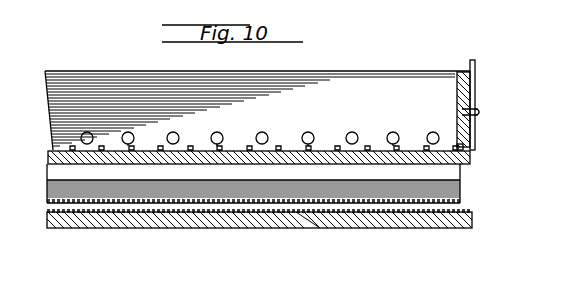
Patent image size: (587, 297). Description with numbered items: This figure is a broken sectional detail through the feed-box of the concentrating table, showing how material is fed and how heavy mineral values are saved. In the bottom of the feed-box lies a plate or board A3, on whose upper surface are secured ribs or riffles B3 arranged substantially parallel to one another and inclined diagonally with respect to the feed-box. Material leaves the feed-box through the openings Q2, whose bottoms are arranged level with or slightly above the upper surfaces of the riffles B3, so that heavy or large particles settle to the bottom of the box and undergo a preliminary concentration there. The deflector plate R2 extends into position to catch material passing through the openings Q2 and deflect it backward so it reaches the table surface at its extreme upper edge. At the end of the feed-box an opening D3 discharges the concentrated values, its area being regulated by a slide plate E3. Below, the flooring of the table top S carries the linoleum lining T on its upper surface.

The openings Q2 is at (388, 132).
The plate or board A3 is at (250, 148).
The ribs or riffles B3 is at (425, 147).
The slide plate E3 is at (478, 79).
The opening D3 is at (463, 152).
The deflector plate R2 is at (457, 188).
The linoleum lining T is at (92, 212).
The flooring of the table top S is at (203, 212).